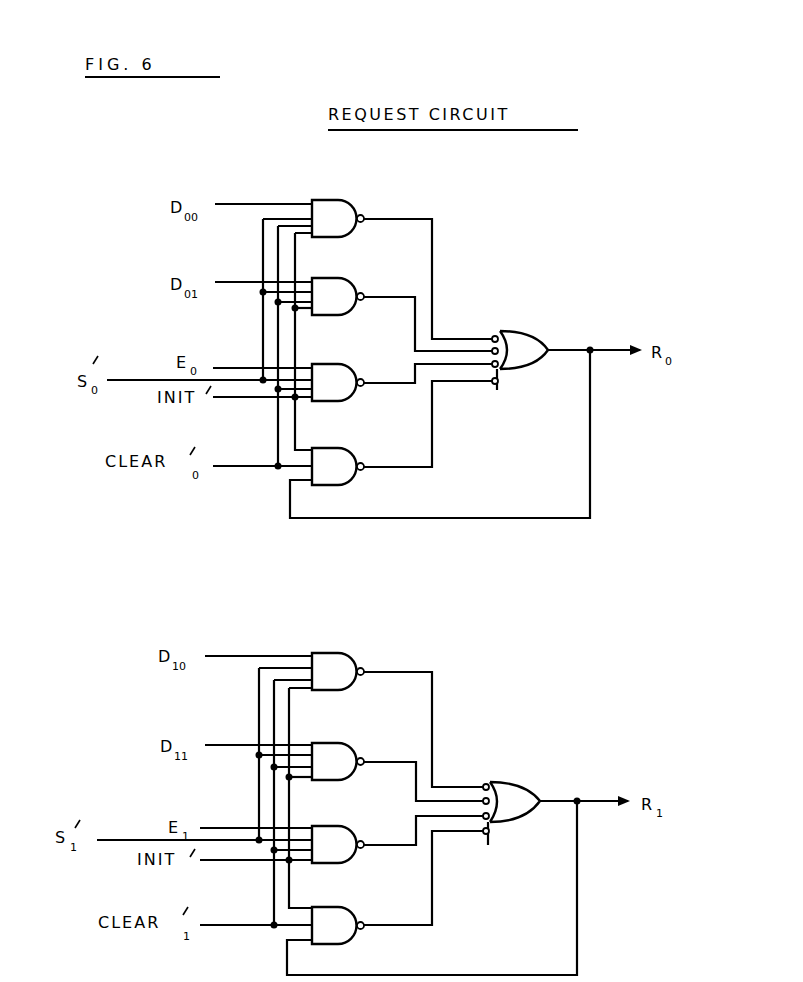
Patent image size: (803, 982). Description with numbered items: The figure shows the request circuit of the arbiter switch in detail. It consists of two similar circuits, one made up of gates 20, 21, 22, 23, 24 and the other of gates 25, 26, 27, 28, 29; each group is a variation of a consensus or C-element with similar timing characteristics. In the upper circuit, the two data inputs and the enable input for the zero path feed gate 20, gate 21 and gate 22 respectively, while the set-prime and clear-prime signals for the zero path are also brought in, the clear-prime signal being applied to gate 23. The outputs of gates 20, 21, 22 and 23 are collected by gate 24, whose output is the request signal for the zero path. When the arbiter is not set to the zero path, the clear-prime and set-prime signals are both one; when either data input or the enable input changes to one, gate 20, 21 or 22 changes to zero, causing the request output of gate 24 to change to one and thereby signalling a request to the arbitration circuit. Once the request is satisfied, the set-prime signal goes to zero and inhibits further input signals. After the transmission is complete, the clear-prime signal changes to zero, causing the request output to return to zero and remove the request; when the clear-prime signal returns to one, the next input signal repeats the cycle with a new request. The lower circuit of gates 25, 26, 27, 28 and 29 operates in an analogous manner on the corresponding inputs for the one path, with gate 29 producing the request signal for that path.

The gate 20 is at (354, 204).
The gate 21 is at (354, 280).
The gate 22 is at (354, 366).
The gate 23 is at (354, 450).
The gate 24 is at (536, 333).
The gate 25 is at (356, 657).
The gate 26 is at (354, 745).
The gate 27 is at (354, 828).
The gate 28 is at (354, 909).
The gate 29 is at (524, 784).